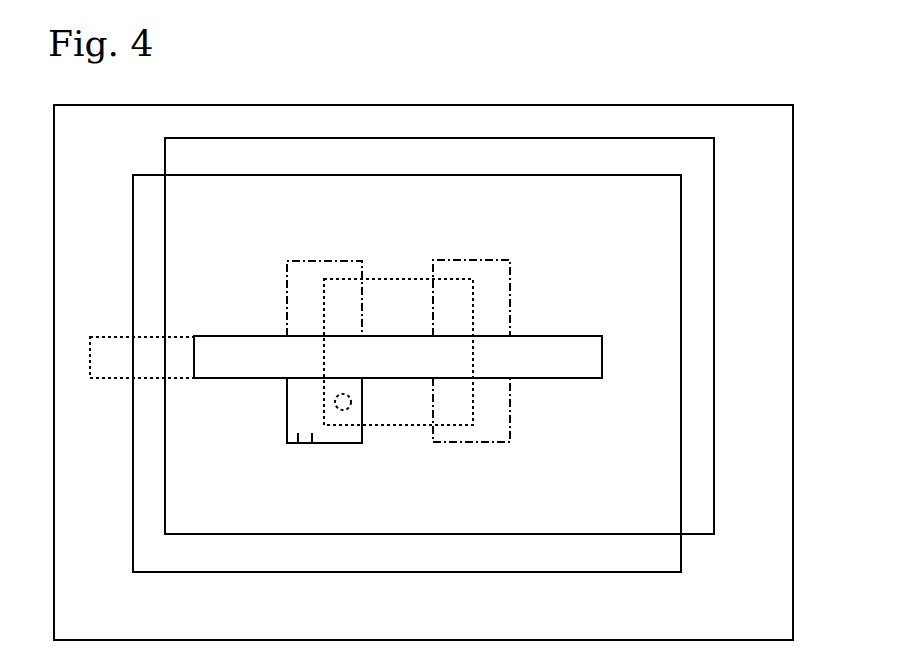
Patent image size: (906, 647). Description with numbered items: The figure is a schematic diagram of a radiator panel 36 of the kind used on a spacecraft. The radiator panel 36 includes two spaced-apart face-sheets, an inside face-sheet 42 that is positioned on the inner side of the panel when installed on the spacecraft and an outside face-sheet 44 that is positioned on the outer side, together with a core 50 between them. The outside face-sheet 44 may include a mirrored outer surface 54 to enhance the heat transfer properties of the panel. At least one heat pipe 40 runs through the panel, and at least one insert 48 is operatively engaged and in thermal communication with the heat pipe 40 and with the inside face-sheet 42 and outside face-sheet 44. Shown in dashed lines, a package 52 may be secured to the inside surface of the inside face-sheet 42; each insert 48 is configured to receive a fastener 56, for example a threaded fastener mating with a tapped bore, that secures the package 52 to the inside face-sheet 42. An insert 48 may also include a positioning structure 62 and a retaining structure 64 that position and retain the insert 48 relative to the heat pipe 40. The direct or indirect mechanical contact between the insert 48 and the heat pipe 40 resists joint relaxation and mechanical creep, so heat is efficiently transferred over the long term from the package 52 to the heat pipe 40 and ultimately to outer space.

The radiator panel 36 is at (745, 105).
The heat pipe 40 is at (553, 336).
The inside face-sheet 42 is at (714, 178).
The outside face-sheet 44 is at (683, 360).
The insert 48 is at (295, 258).
The core 50 is at (700, 553).
The package 52 is at (381, 276).
The mirrored outer surface 54 is at (407, 373).
The fastener 56 is at (352, 400).
The positioning structure 62 is at (297, 446).
The retaining structure 64 is at (313, 446).